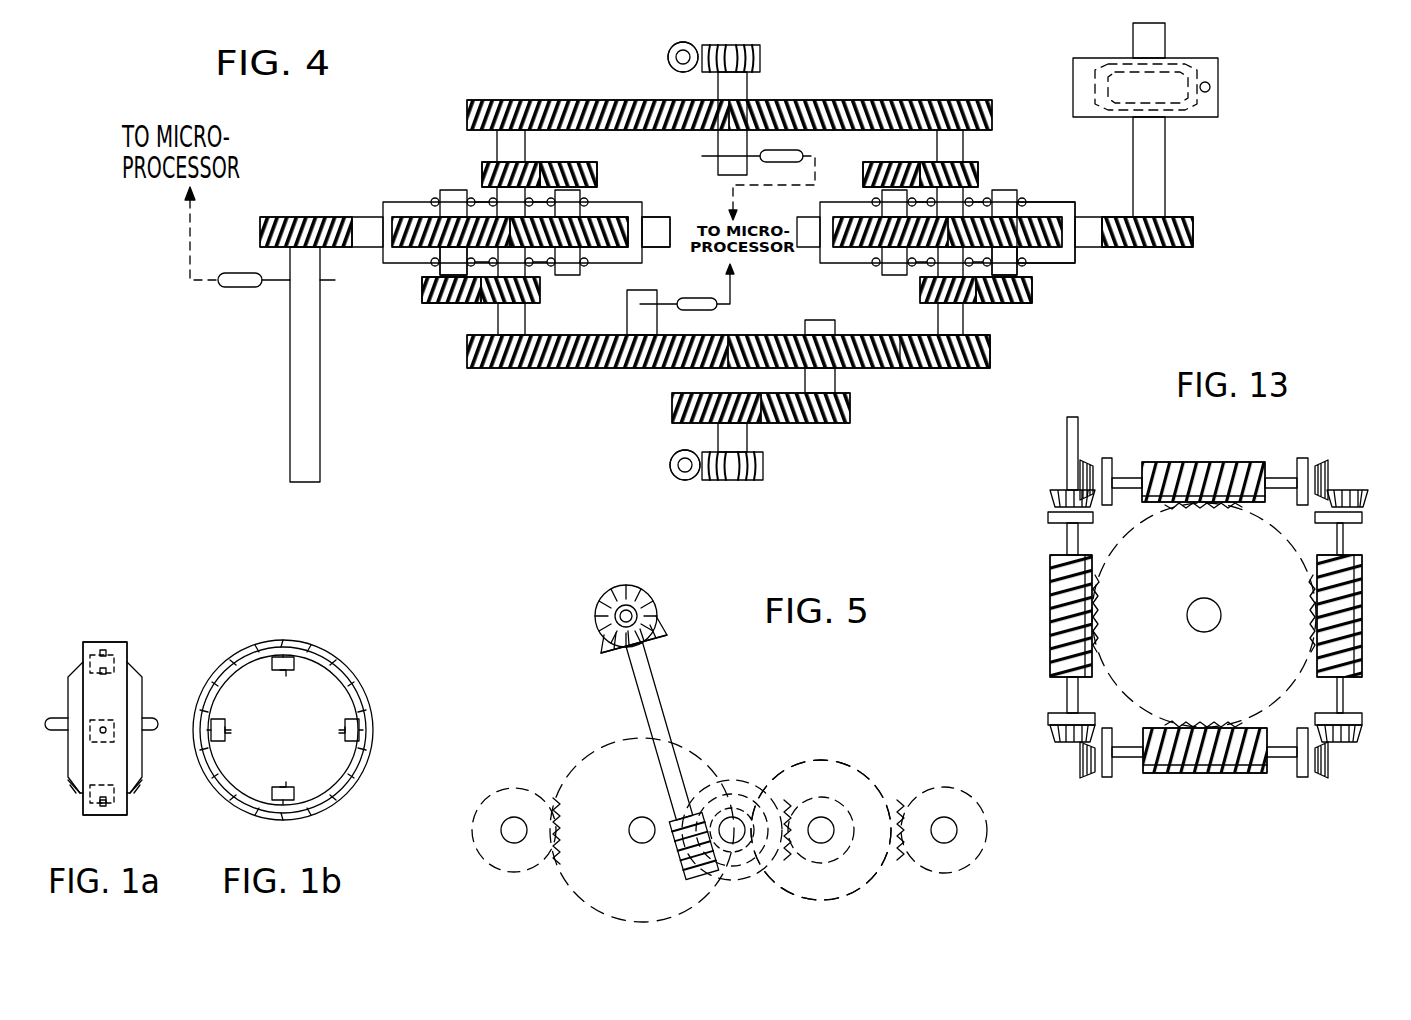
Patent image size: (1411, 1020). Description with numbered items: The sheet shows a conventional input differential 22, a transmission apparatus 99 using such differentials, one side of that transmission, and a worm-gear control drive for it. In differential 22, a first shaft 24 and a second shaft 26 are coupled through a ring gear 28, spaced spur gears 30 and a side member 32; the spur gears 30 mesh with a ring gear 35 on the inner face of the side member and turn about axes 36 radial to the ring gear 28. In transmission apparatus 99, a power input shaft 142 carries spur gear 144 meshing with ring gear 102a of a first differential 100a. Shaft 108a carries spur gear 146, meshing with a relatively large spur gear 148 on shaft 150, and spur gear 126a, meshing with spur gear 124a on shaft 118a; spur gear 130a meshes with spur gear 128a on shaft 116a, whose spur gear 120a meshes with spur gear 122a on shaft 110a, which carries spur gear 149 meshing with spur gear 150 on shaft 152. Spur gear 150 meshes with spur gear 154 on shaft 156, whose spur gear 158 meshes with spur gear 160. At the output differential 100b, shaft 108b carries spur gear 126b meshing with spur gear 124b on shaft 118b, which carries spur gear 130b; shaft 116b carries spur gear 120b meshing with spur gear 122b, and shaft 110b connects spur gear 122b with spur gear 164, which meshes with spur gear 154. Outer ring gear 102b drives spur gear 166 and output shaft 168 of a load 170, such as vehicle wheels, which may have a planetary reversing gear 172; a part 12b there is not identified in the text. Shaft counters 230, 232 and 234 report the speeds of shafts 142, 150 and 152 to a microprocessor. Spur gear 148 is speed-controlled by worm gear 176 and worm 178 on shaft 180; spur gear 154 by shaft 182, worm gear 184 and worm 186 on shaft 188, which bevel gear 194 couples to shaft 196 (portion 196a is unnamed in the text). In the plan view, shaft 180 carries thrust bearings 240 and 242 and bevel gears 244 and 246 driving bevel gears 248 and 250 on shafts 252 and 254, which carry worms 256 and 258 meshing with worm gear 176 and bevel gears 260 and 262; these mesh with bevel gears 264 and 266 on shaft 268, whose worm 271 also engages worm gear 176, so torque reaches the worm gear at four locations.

In FIG. 4, the housing 12b is at (1045, 178).
In FIG. 1A, the input differential 22 is at (128, 636).
In FIG. 1B, the input differential 22 is at (232, 649).
In FIG. 1A, the first shaft 24 is at (62, 717).
In FIG. 1A, the second shaft 26 is at (152, 717).
In FIG. 1A, the ring gear 28 is at (112, 642).
In FIG. 1B, the ring gear 28 is at (312, 647).
In FIG. 1A, the spur gears 30 is at (95, 655).
In FIG. 1B, the spur gears 30 is at (284, 688).
In FIG. 1A, the side member 32 is at (131, 670).
In FIG. 1B, the ring gear 35 is at (238, 803).
In FIG. 1A, the axes 36 is at (112, 673).
In FIG. 1B, the axes 36 is at (337, 735).
In FIG. 4, the transmission apparatus 99 is at (1230, 203).
In FIG. 5, the transmission apparatus 99 is at (737, 694).
In FIG. 4, the first differential 100a is at (380, 268).
In FIG. 4, the output differential 100b is at (1078, 204).
In FIG. 4, the ring gear 102a is at (368, 215).
In FIG. 4, the outer ring gear 102b is at (1090, 248).
In FIG. 4, the shaft 108a is at (525, 148).
In FIG. 4, the shaft 108b is at (966, 147).
In FIG. 4, the shaft 110a is at (525, 322).
In FIG. 5, the shaft 110a is at (510, 840).
In FIG. 4, the shaft 110b is at (963, 320).
In FIG. 5, the shaft 110b is at (950, 836).
In FIG. 4, the shaft 116a is at (437, 264).
In FIG. 4, the shaft 116b is at (1027, 265).
In FIG. 4, the shaft 118a is at (580, 210).
In FIG. 4, the shaft 118b is at (882, 213).
In FIG. 4, the spur gear 120a is at (448, 305).
In FIG. 4, the spur gear 120b is at (1033, 300).
In FIG. 4, the spur gear 122a is at (540, 300).
In FIG. 4, the spur gear 122b is at (920, 287).
In FIG. 4, the spur gear 124a is at (596, 170).
In FIG. 4, the spur gear 124b is at (872, 140).
In FIG. 4, the spur gear 126a is at (480, 160).
In FIG. 4, the spur gear 126b is at (978, 165).
In FIG. 4, the spur gear 128a is at (417, 217).
In FIG. 4, the spur gear 130a is at (645, 220).
In FIG. 4, the spur gear 130b is at (862, 262).
In FIG. 4, the power input shaft 142 is at (320, 447).
In FIG. 4, the spur gear 144 is at (293, 217).
In FIG. 4, the spur gear 146 is at (482, 100).
In FIG. 4, the spur gear 148 is at (618, 100).
In FIG. 4, the spur gear 149 is at (503, 368).
In FIG. 5, the spur gear 149 is at (522, 767).
In FIG. 4, the spur gear 150 is at (747, 98).
In FIG. 5, the spur gear 150 is at (593, 755).
In FIG. 4, the shaft 152 is at (633, 270).
In FIG. 5, the shaft 152 is at (643, 814).
In FIG. 4, the spur gear 154 is at (787, 335).
In FIG. 5, the spur gear 154 is at (817, 747).
In FIG. 4, the shaft 156 is at (835, 377).
In FIG. 5, the shaft 156 is at (820, 820).
In FIG. 4, the spur gear 158 is at (837, 423).
In FIG. 4, the spur gear 160 is at (930, 100).
In FIG. 4, the spur gear 164 is at (945, 368).
In FIG. 5, the spur gear 164 is at (935, 788).
In FIG. 4, the spur gear 166 is at (1180, 248).
In FIG. 4, the output shaft 168 is at (1165, 166).
In FIG. 4, the load 170 is at (1218, 108).
In FIG. 4, the planetary reversing gear 172 is at (1220, 66).
In FIG. 4, the worm gear 176 is at (760, 62).
In FIG. 13, the worm gear 176 is at (1226, 578).
In FIG. 4, the worm 178 is at (690, 50).
In FIG. 13, the worm 178 is at (1050, 570).
In FIG. 4, the shaft 180 is at (669, 50).
In FIG. 13, the shaft 180 is at (1078, 438).
In FIG. 4, the shaft 182 is at (747, 440).
In FIG. 5, the shaft 182 is at (732, 840).
In FIG. 4, the worm gear 184 is at (745, 480).
In FIG. 5, the worm gear 184 is at (735, 797).
In FIG. 4, the worm 186 is at (672, 478).
In FIG. 5, the worm 186 is at (677, 855).
In FIG. 4, the shaft 188 is at (670, 465).
In FIG. 5, the shaft 188 is at (667, 722).
In FIG. 5, the bevel gear 194 is at (597, 608).
In FIG. 5, the shaft 196 is at (634, 615).
In FIG. 5, the bevel gear skirt 196a is at (650, 640).
In FIG. 4, the shaft counter 230 is at (222, 287).
In FIG. 4, the shaft counter 232 is at (803, 155).
In FIG. 4, the shaft counter 234 is at (705, 298).
In FIG. 13, the thrust bearing 240 is at (1048, 516).
In FIG. 13, the thrust bearing 242 is at (1048, 718).
In FIG. 13, the bevel gear 244 is at (1057, 490).
In FIG. 13, the bevel gear 246 is at (1062, 735).
In FIG. 13, the bevel gear 248 is at (1080, 468).
In FIG. 13, the bevel gear 250 is at (1090, 778).
In FIG. 13, the shaft 252 is at (1125, 478).
In FIG. 13, the shaft 254 is at (1128, 757).
In FIG. 13, the worm 256 is at (1207, 462).
In FIG. 13, the worm 258 is at (1210, 773).
In FIG. 13, the bevel gear 260 is at (1318, 460).
In FIG. 13, the bevel gear 262 is at (1325, 778).
In FIG. 13, the bevel gear 264 is at (1355, 490).
In FIG. 13, the bevel gear 266 is at (1348, 733).
In FIG. 13, the shaft 268 is at (1343, 692).
In FIG. 13, the worm 271 is at (1330, 593).